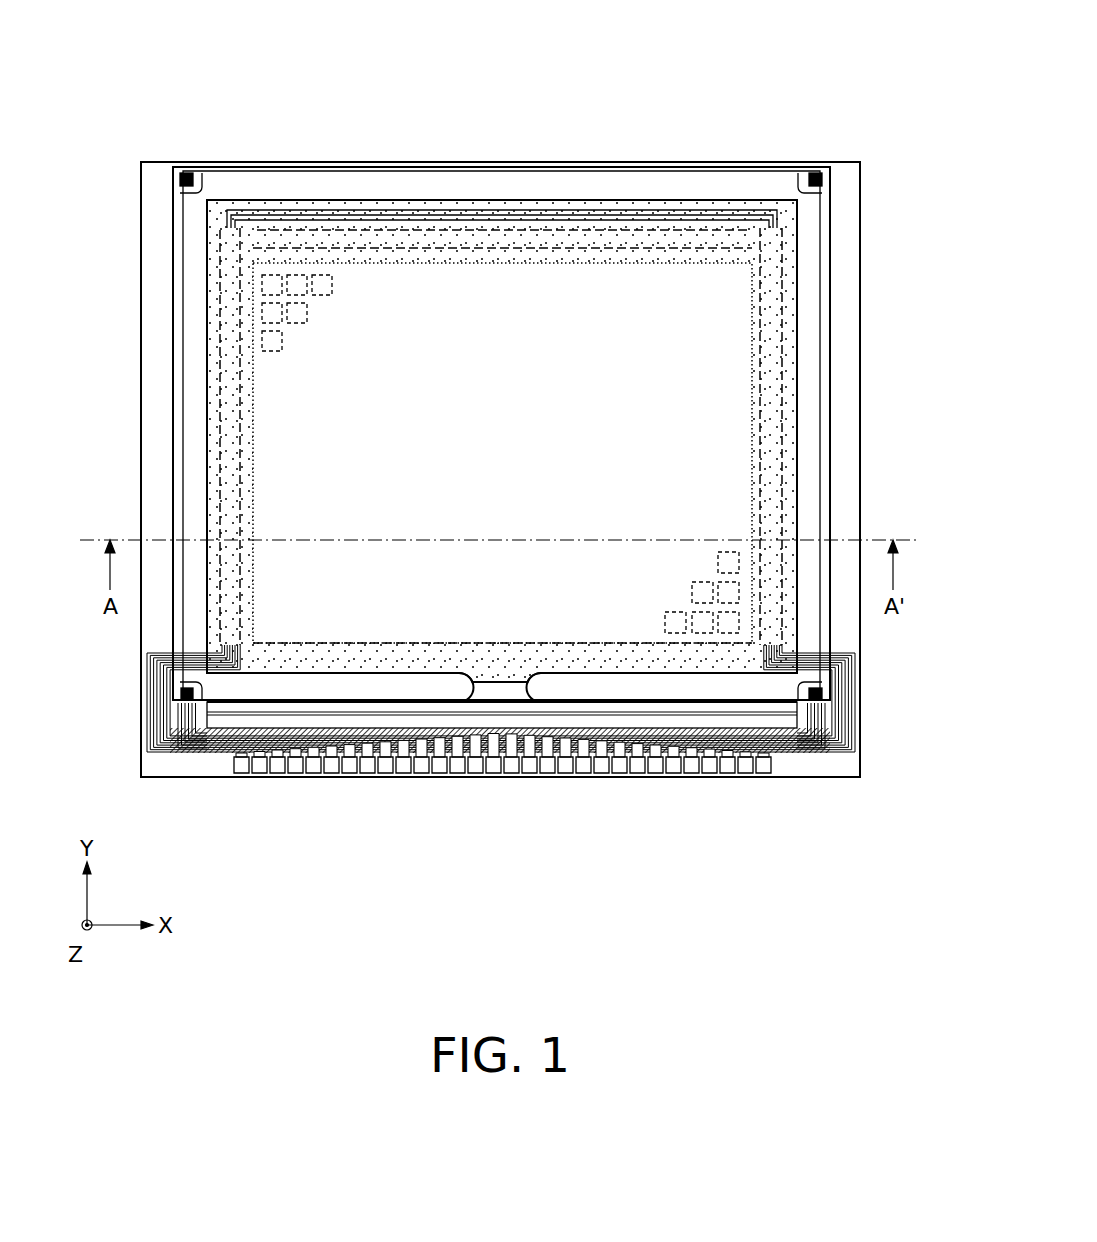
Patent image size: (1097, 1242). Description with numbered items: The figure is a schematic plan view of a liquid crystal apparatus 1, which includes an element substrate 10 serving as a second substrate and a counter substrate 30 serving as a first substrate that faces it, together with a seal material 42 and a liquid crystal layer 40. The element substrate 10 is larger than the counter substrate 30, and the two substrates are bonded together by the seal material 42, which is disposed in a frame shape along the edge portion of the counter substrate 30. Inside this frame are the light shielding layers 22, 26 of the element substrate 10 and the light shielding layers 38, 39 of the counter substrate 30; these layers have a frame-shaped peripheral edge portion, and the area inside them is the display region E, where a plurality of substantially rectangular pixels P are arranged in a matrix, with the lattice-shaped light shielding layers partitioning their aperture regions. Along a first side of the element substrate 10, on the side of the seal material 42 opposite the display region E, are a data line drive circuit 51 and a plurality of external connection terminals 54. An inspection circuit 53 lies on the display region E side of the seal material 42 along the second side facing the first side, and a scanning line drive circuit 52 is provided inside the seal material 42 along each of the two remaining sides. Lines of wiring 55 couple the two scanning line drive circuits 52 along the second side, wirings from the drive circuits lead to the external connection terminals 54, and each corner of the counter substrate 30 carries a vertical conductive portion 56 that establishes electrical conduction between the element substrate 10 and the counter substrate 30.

The liquid crystal apparatus 1 is at (880, 81).
The element substrate 10 is at (280, 161).
The counter substrate 30 is at (396, 166).
The liquid crystal layer 40 is at (710, 397).
The seal material 42 is at (807, 427).
The display region E is at (733, 487).
The scanning line drive circuit 52 is at (235, 412).
The inspection circuit 53 is at (605, 238).
The wiring 55 is at (513, 208).
The vertical conductive portion 56 is at (178, 186).
The data line drive circuit 51 is at (243, 722).
The external connection terminals 54 is at (352, 758).
The pixel P is at (335, 287).
The light shielding layer 22 is at (502, 634).
The light shielding layer 26 is at (502, 634).
The light shielding layer 38 is at (502, 634).
The light shielding layer 39 is at (437, 650).